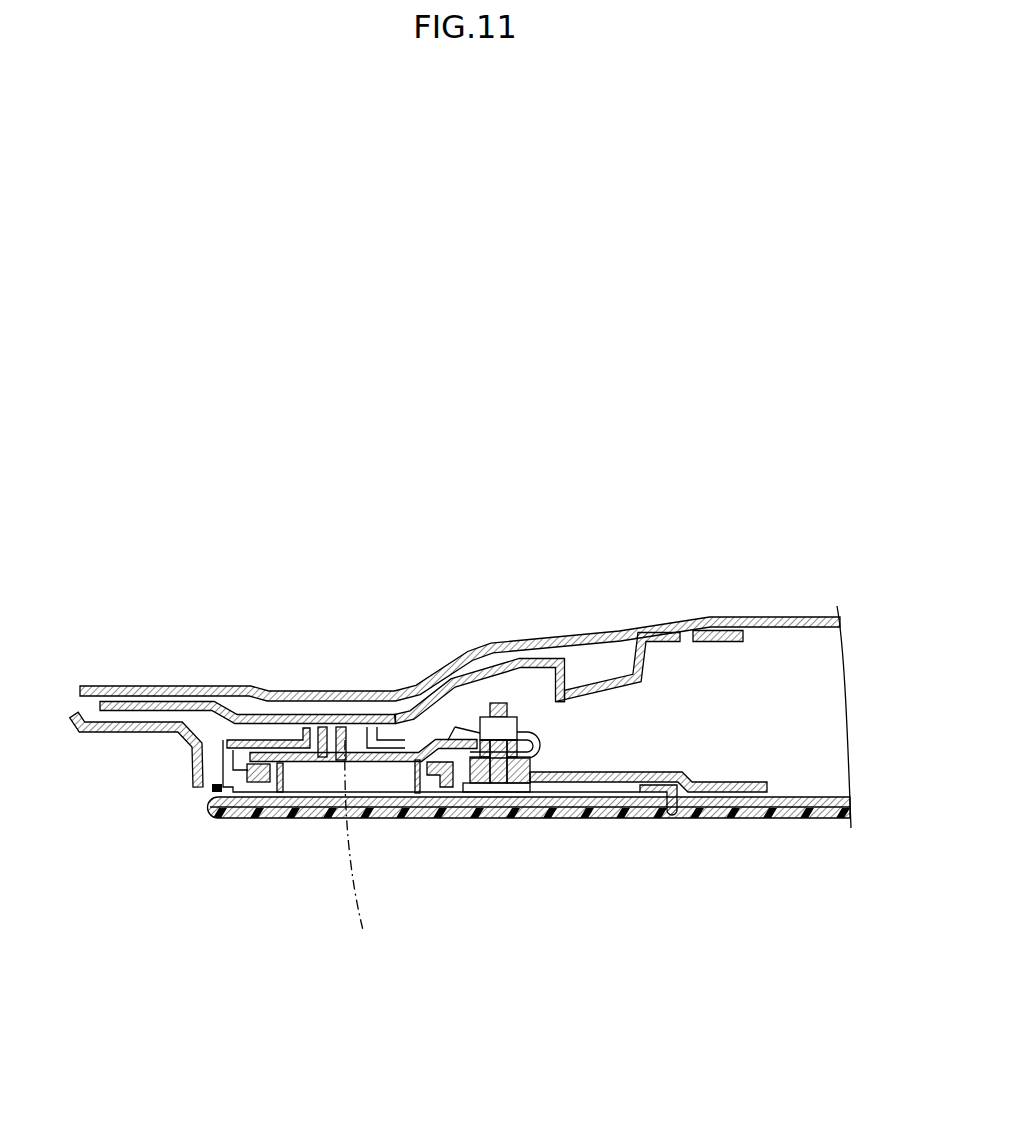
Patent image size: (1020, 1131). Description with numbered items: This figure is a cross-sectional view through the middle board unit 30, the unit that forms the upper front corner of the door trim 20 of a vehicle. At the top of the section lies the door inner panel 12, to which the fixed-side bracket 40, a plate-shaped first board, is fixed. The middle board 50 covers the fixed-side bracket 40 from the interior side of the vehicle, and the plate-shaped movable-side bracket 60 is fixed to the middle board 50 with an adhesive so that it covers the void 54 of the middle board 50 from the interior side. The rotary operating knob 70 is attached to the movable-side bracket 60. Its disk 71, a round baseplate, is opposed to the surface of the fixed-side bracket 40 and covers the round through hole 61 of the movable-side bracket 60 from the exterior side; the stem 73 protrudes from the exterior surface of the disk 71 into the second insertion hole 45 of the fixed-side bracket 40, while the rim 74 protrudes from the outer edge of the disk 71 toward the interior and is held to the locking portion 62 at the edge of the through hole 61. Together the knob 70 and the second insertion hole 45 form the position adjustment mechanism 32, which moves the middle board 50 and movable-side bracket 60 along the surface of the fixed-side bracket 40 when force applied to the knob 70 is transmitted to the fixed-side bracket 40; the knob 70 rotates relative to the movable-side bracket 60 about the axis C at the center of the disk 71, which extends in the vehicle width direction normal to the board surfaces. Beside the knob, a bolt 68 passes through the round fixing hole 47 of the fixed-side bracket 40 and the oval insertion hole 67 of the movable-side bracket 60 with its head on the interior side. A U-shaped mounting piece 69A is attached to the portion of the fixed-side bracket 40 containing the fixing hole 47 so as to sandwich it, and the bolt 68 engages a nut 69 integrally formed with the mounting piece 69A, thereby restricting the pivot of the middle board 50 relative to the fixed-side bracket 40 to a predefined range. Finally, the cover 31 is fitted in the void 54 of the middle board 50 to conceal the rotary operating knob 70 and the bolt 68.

The door inner panel 12 is at (781, 620).
The door trim 20 is at (180, 708).
The second insertion hole 45 is at (357, 713).
The mounting piece 69A is at (553, 707).
The middle board unit 30 is at (178, 773).
The rim 74 is at (237, 755).
The fixed-side bracket 40 is at (252, 752).
The locking portion 62 is at (270, 760).
The stem 73 is at (343, 743).
The through hole 61 is at (284, 764).
The rotary operating knob 70 is at (300, 779).
The disk 71 is at (400, 773).
The position adjustment mechanism 32 is at (370, 757).
The nut 69 is at (497, 717).
The fixing hole 47 is at (512, 747).
The insertion hole 67 is at (512, 770).
The bolt 68 is at (492, 786).
The movable-side bracket 60 is at (620, 777).
The middle board 50 is at (763, 799).
The cover 31 is at (603, 813).
The void 54 is at (672, 813).
The axis C is at (358, 850).